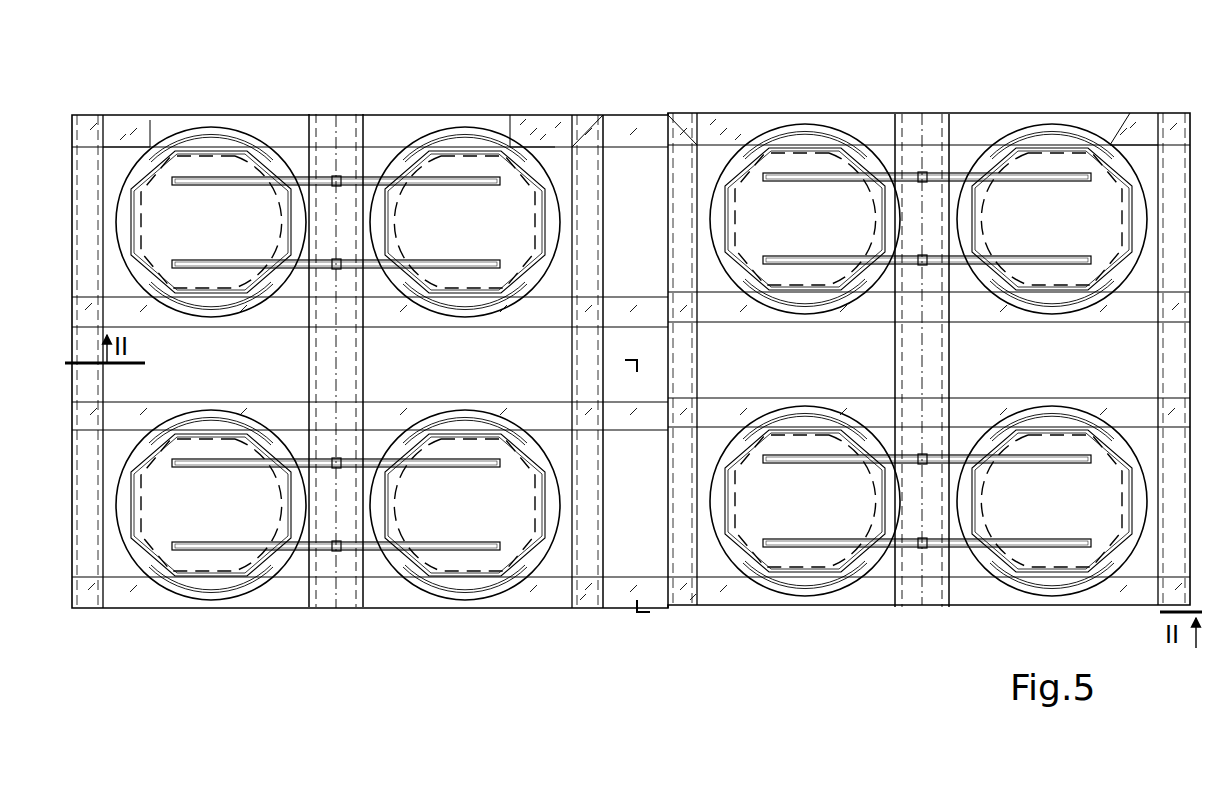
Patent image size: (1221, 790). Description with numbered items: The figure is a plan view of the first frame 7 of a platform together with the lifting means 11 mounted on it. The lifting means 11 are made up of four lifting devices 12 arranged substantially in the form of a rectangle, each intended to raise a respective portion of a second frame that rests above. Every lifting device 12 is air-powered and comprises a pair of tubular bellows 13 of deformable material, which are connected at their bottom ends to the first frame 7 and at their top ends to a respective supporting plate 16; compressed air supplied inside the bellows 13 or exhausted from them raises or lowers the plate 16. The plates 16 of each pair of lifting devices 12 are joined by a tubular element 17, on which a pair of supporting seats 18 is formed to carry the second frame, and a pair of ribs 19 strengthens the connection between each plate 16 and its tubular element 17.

The first frame 7 is at (622, 98).
The lifting means 11 is at (152, 130).
The lifting device 12 is at (386, 236).
The tubular bellows 13 is at (222, 134).
The supporting plate 16 is at (160, 228).
The tubular element 17 is at (337, 130).
The supporting seat 18 is at (345, 128).
The rib 19 is at (280, 180).